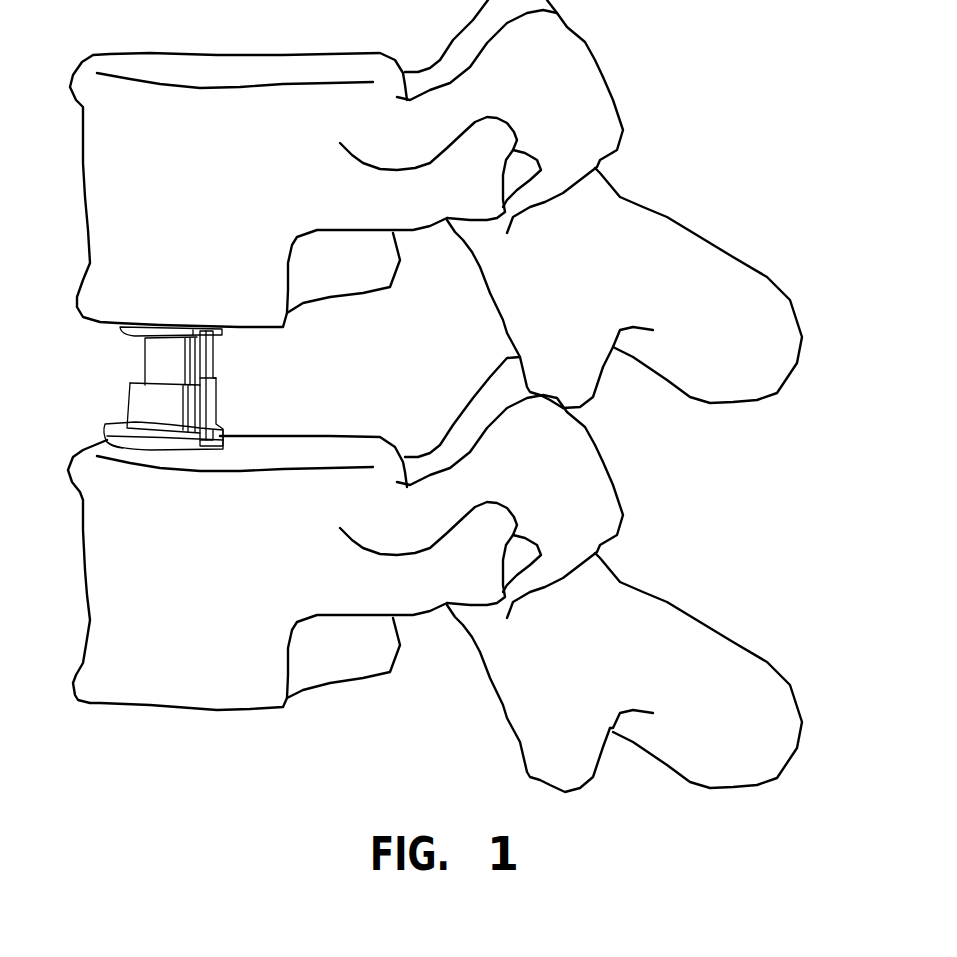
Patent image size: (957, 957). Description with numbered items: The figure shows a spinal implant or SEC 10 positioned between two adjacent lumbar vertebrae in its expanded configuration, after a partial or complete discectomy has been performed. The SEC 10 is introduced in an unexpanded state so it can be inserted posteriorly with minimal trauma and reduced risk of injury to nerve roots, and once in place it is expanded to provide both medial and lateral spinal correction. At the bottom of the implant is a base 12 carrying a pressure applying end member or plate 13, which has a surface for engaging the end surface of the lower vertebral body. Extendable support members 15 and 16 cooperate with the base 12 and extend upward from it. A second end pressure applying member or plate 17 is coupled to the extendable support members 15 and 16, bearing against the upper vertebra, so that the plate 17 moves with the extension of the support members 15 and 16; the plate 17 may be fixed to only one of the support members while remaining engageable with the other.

The spinal implant or SEC 10 is at (256, 402).
The base 12 is at (107, 435).
The pressure applying end member or plate 13 is at (107, 437).
The extendable support member 15 is at (210, 355).
The extendable support member 16 is at (145, 360).
The second end pressure applying member or plate 17 is at (130, 330).